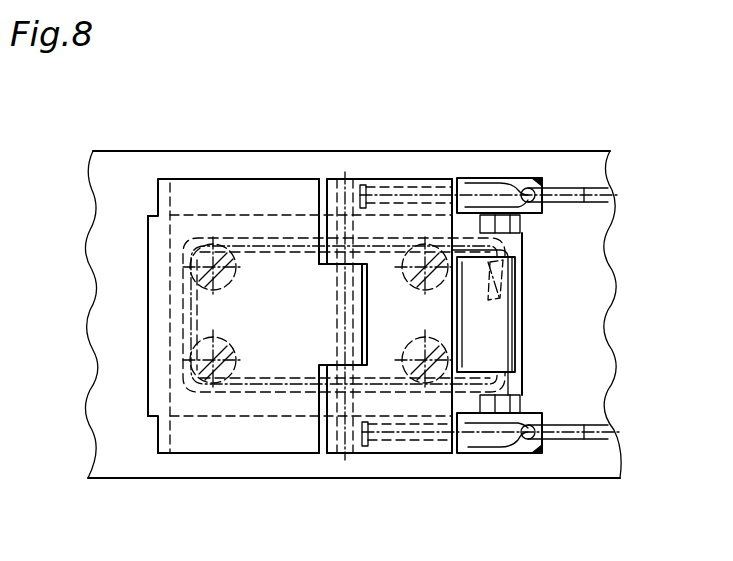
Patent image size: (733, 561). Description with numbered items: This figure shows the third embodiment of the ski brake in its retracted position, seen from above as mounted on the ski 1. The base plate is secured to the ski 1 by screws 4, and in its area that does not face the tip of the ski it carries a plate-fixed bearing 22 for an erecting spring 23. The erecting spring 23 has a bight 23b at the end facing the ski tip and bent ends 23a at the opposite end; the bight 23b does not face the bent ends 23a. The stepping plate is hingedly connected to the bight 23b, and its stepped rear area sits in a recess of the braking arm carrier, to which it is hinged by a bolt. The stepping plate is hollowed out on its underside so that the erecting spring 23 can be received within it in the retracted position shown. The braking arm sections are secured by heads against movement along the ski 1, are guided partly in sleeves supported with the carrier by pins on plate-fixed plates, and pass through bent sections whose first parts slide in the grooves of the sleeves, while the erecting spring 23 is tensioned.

The ski 1 is at (127, 177).
The screws 4 is at (225, 246).
The plate-fixed bearing 22 is at (515, 317).
The bent ends 23a is at (502, 277).
The erecting spring 23 is at (247, 390).
The bight 23b is at (190, 323).